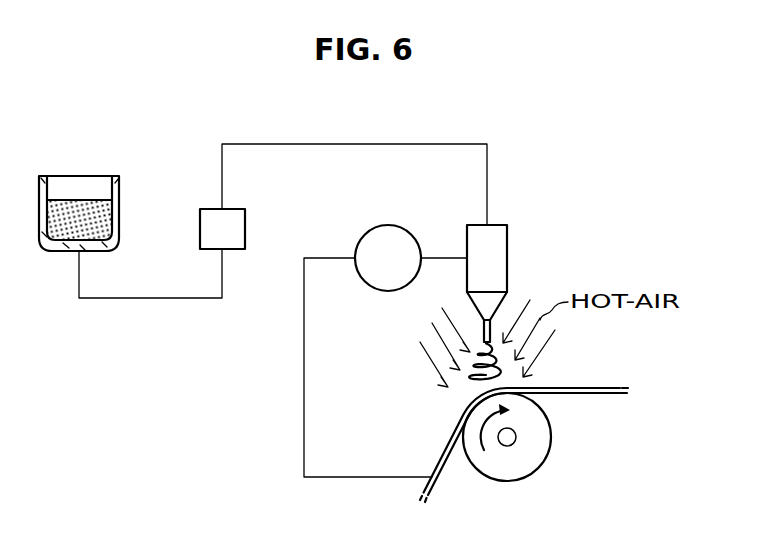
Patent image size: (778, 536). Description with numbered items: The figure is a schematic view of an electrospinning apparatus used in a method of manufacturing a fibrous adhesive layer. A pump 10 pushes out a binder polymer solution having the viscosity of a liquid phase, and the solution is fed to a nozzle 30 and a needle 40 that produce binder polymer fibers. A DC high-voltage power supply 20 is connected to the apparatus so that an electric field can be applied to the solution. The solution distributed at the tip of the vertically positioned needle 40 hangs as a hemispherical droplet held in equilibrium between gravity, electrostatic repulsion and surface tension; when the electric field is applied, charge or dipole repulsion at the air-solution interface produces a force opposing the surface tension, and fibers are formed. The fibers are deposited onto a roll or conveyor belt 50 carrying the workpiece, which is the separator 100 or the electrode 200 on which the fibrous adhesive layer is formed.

The pump 10 is at (245, 229).
The DC high-voltage power supply 20 is at (388, 225).
The nozzle 30 is at (505, 243).
The needle 40 is at (497, 323).
The roll or conveyor belt 50 is at (535, 453).
The separator 100 is at (551, 417).
The electrode 200 is at (602, 387).